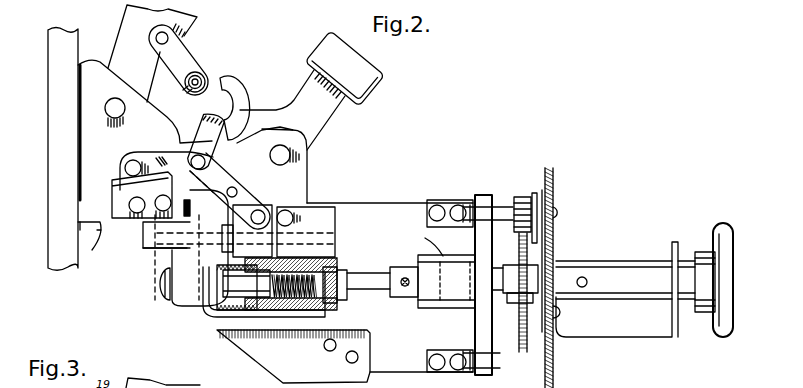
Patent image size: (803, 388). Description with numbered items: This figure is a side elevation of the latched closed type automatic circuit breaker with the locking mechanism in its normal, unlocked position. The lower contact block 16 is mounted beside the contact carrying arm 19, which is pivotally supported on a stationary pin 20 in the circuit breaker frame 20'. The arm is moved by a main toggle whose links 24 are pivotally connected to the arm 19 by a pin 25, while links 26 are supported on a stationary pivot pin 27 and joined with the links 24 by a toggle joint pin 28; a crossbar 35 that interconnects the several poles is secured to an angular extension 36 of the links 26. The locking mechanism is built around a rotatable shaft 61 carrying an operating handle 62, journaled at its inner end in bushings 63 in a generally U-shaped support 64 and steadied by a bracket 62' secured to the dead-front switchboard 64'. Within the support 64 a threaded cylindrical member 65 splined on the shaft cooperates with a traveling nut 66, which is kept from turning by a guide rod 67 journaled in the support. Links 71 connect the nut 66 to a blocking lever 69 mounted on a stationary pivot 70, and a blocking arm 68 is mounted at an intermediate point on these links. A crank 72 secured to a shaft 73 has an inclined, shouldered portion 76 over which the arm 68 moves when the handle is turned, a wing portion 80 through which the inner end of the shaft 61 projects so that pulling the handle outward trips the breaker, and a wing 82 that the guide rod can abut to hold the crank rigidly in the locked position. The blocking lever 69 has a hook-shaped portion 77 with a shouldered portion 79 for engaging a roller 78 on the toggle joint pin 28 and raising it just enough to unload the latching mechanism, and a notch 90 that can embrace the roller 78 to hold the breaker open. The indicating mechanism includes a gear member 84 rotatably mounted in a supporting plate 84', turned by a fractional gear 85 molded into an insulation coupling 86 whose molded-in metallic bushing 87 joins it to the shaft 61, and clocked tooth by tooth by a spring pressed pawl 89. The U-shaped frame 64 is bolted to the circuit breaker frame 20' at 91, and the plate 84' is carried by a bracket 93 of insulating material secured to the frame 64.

The contact block 16 is at (48, 171).
The carrying arm 19 is at (118, 36).
The stationary pin 20 is at (145, 101).
The circuit breaker frame 20' is at (89, 250).
The links 24 is at (188, 56).
The pin 25 is at (160, 40).
The links 26 is at (224, 80).
The stationary pivot pin 27 is at (291, 156).
The toggle joint pin 28 is at (199, 78).
The crossbar 35 is at (378, 80).
The angular extension 36 is at (330, 118).
The shaft 61 is at (371, 273).
The operating handle 62 is at (714, 293).
The bracket 62' is at (617, 301).
The bushings 63 is at (340, 267).
The U-shaped support 64 is at (251, 302).
The switchboard 64' is at (578, 344).
The threaded cylindrical member 65 is at (233, 302).
The traveling nut 66 is at (258, 305).
The guide rod 67 is at (238, 236).
The blocking arm 68 is at (240, 191).
The blocking lever 69 is at (145, 147).
The stationary pivot 70 is at (125, 166).
The links 71 is at (232, 177).
The crank 72 is at (170, 261).
The shaft 73 is at (113, 181).
The inclined shouldered portion 76 is at (191, 163).
The hook-shaped portion 77 is at (251, 103).
The roller 78 is at (187, 88).
The shouldered portion 79 is at (205, 114).
The wing portion 80 is at (173, 301).
The wing 82 is at (157, 249).
The gear member 84 is at (543, 278).
The supporting plate 84' is at (513, 210).
The fractional gear 85 is at (513, 303).
The insulation coupling 86 is at (457, 310).
The metallic bushing 87 is at (407, 298).
The spring pressed pawl 89 is at (517, 240).
The notch 90 is at (196, 138).
The bolting point 91 is at (98, 230).
The bracket 93 is at (412, 203).